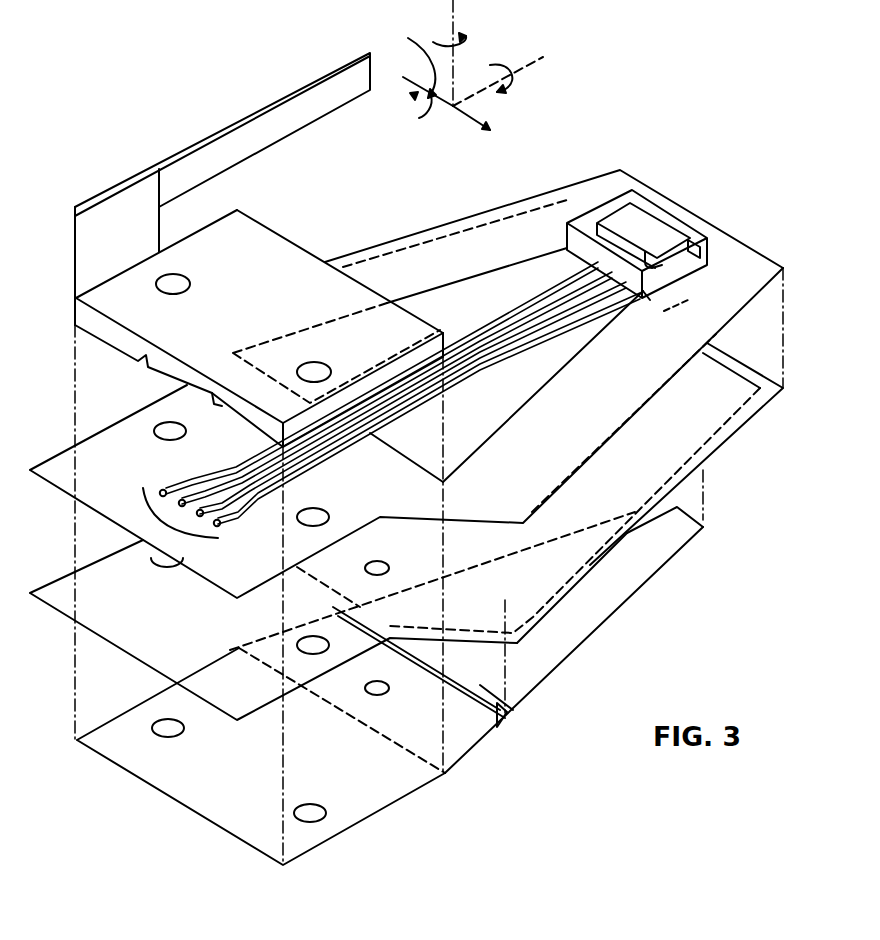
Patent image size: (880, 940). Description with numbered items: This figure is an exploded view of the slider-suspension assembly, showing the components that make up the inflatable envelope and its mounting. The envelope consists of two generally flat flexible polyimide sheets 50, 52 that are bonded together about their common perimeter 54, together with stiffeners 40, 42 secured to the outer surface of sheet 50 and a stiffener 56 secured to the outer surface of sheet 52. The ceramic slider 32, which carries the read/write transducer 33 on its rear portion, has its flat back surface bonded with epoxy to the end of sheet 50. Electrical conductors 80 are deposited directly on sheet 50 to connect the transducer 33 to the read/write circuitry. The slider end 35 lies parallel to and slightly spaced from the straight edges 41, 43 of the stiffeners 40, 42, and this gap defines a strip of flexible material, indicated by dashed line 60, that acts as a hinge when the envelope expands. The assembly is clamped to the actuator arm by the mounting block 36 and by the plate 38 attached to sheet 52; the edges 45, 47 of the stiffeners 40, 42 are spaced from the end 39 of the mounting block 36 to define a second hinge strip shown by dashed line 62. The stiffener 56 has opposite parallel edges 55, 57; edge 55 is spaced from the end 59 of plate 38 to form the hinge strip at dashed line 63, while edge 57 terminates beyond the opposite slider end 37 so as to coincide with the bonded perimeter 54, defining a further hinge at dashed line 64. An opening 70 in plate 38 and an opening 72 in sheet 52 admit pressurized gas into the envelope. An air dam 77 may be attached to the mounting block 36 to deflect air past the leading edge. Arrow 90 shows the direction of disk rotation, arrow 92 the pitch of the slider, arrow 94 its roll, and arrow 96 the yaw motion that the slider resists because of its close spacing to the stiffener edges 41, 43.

The slider 32 is at (613, 200).
The read/write transducer 33 is at (730, 252).
The end of slider 35 is at (608, 250).
The mounting block 36 is at (85, 270).
The end of slider 37 is at (710, 248).
The plate 38 is at (382, 797).
The end of mounting block 39 is at (275, 233).
The stiffener 40 is at (437, 300).
The straight edge of stiffener 41 is at (557, 250).
The stiffener 42 is at (552, 368).
The straight edge of stiffener 43 is at (641, 296).
The edge of stiffener 45 is at (214, 396).
The edge of stiffener 47 is at (390, 462).
The flexible sheet 50 is at (455, 240).
The flexible sheet 52 is at (587, 550).
The perimeter 54 is at (733, 425).
The edge of stiffener 55 is at (500, 716).
The stiffener 56 is at (570, 643).
The edge of stiffener 57 is at (690, 511).
The end of mounting plate 59 is at (480, 688).
The dashed line 60 is at (689, 302).
The dashed line 62 is at (233, 354).
The dashed line 63 is at (478, 587).
The dashed line 64 is at (772, 256).
The opening 70 is at (390, 688).
The opening 72 is at (365, 567).
The air dam 77 is at (327, 72).
The electrical conductors 80 is at (178, 522).
The arrow 90 is at (409, 59).
The arrow 92 is at (517, 88).
The arrow 94 is at (419, 118).
The arrow 96 is at (470, 40).